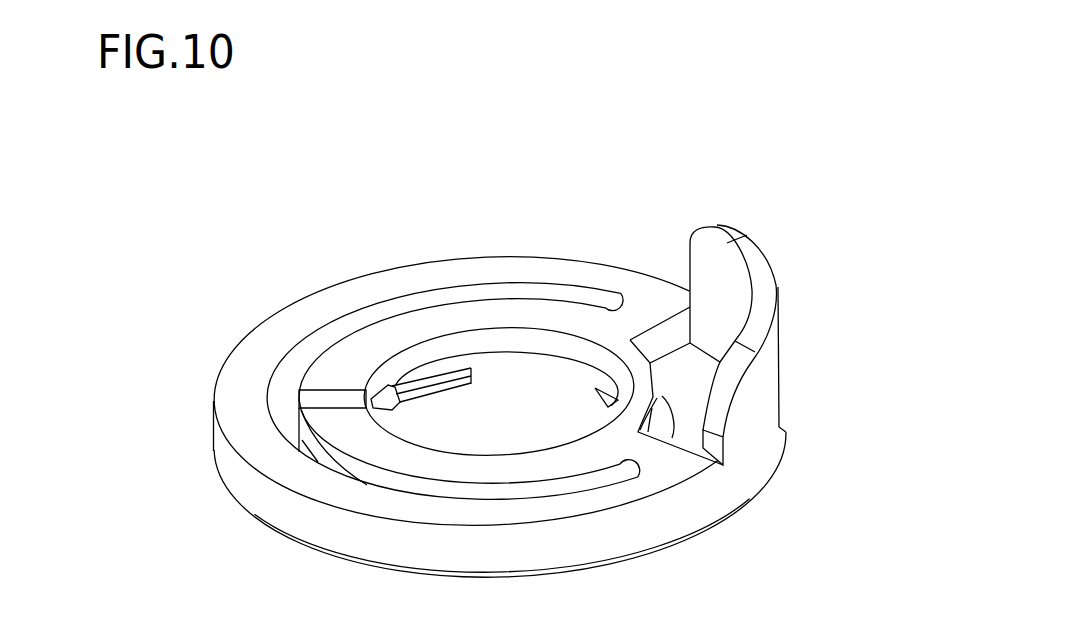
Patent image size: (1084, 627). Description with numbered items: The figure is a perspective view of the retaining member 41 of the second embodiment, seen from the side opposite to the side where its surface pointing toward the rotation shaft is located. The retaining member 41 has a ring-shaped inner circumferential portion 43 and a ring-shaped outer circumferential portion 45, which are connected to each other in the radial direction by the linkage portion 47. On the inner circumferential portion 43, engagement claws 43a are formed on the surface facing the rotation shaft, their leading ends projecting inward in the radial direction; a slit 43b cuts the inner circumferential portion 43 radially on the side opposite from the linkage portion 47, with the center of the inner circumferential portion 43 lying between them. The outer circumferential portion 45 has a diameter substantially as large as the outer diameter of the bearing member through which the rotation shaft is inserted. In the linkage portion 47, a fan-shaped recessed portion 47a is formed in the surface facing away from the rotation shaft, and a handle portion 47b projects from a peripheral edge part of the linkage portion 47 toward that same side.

The retaining member 41 is at (350, 250).
The inner circumferential portion 43 is at (500, 311).
The engagement claws 43a is at (432, 392).
The slit 43b is at (328, 402).
The outer circumferential portion 45 is at (237, 408).
The linkage portion 47 is at (673, 453).
The fan-shaped recessed portion 47a is at (680, 368).
The handle portion 47b is at (765, 288).